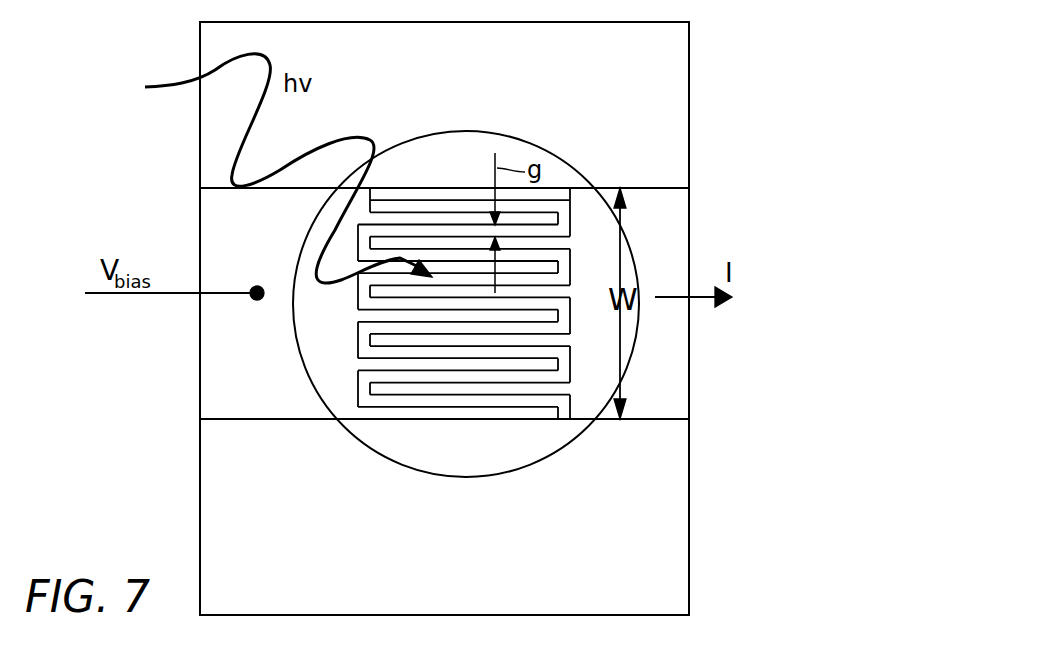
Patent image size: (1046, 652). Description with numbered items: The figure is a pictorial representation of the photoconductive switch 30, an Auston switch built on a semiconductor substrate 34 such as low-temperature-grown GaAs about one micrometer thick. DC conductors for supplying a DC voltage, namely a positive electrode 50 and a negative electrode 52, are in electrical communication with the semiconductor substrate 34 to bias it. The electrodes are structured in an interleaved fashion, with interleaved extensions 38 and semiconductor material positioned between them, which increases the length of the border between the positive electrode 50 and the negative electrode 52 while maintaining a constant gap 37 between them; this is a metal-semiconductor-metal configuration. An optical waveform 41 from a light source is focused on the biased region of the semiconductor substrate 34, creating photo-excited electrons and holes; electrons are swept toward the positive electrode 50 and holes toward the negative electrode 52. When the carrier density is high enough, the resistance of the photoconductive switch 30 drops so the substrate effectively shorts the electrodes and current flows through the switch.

The photoconductive switch 30 is at (637, 252).
The semiconductor substrate 34 is at (662, 520).
The gap 37 is at (567, 232).
The interleaved extensions 38 is at (460, 388).
The optical waveform 41 is at (170, 88).
The positive electrode 50 is at (207, 357).
The negative electrode 52 is at (672, 372).